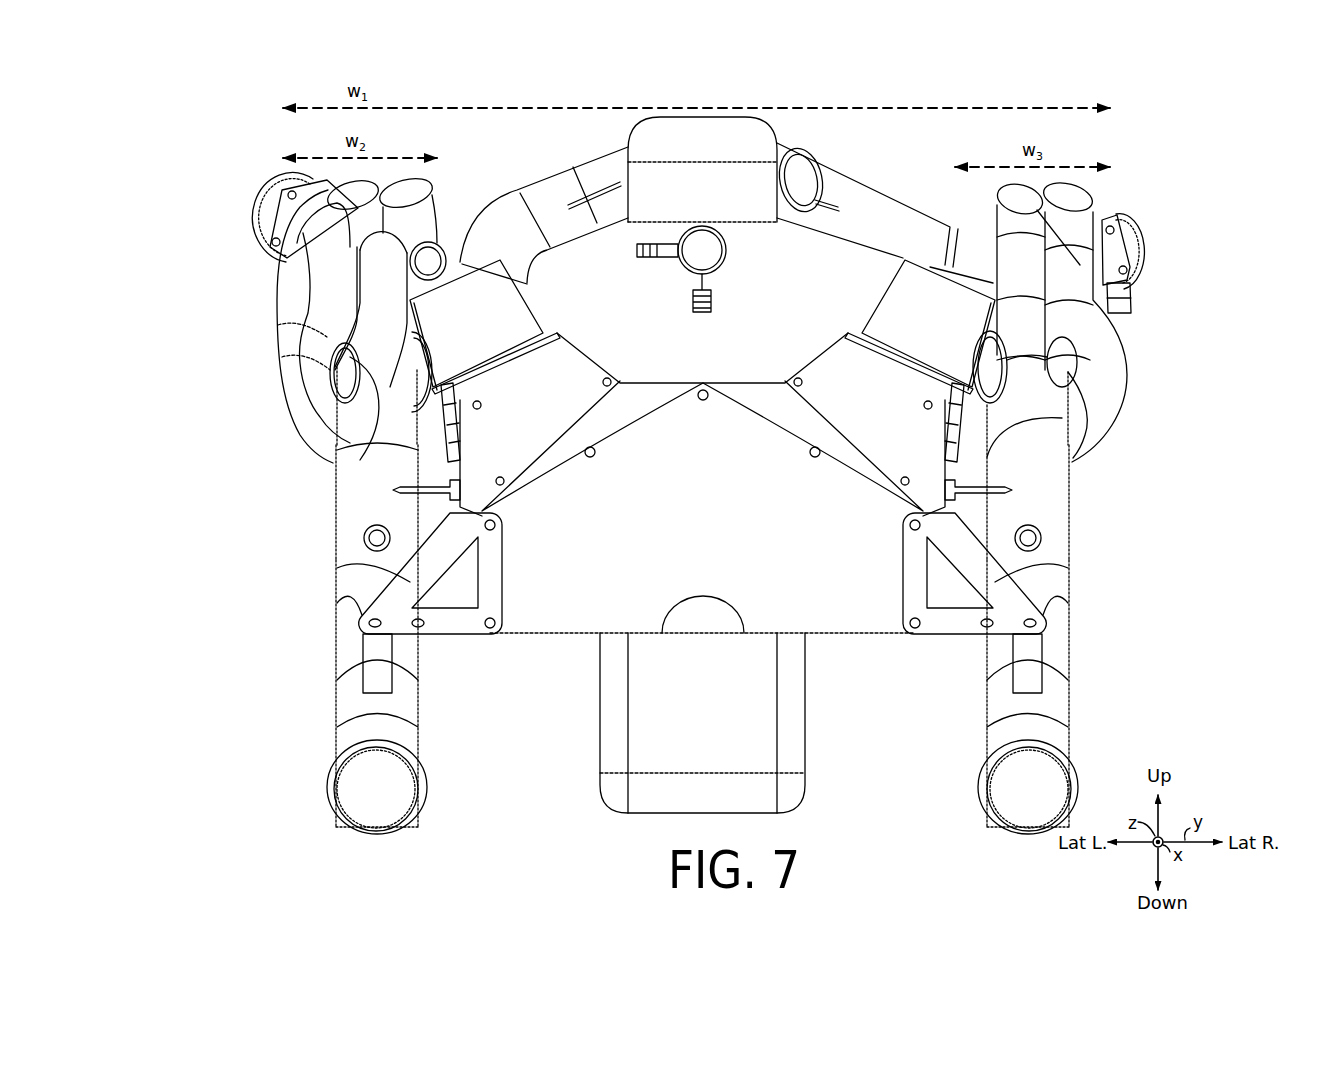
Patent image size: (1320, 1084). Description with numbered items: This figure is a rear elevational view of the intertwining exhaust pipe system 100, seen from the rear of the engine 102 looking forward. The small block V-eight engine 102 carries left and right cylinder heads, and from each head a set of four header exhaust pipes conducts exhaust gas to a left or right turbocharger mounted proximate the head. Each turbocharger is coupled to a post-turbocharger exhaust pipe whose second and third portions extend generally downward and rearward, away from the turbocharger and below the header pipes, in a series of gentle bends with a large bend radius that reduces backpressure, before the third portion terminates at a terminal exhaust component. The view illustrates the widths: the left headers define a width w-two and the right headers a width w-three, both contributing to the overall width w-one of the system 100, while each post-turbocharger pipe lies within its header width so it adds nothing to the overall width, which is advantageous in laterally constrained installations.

The system 100 is at (1145, 152).
The internal combustion engine 102 is at (703, 465).